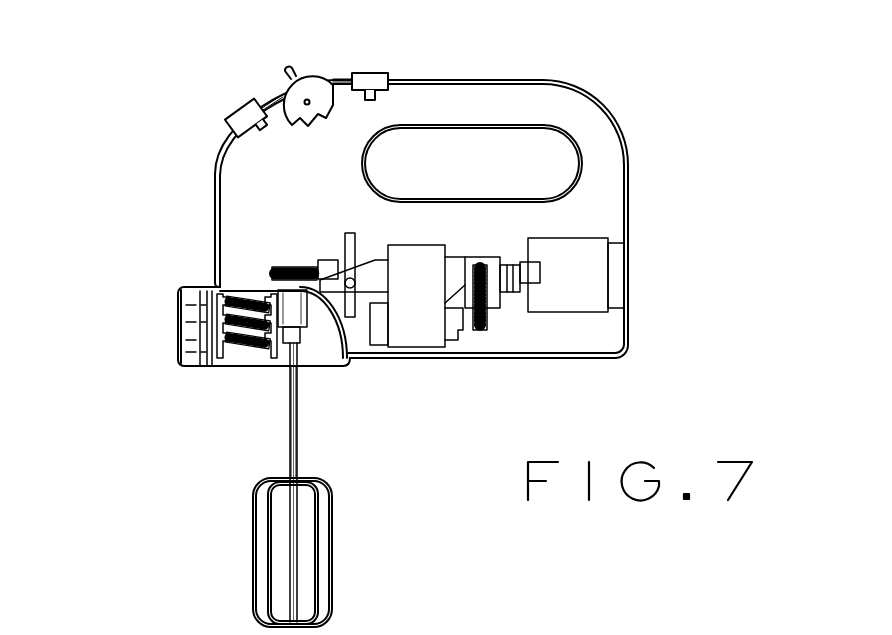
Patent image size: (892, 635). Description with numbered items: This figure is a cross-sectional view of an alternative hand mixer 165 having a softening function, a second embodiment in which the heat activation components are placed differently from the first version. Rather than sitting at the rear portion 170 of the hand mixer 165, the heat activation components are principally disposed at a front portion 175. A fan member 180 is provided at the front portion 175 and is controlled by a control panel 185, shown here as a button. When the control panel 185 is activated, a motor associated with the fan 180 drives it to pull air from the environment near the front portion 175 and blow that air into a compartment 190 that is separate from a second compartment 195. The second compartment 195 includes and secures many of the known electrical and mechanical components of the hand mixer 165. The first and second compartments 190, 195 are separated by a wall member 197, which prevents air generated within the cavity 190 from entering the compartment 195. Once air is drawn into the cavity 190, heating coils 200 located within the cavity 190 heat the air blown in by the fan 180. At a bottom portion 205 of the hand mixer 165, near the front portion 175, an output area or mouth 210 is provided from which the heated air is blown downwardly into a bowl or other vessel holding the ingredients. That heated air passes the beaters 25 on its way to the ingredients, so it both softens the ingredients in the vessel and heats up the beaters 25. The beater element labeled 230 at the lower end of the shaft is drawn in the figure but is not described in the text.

The beaters 25 is at (289, 422).
The hand mixer 165 is at (652, 120).
The rear portion 170 is at (670, 240).
The front portion 175 is at (152, 298).
The fan member 180 is at (193, 303).
The control panel 185 is at (302, 62).
The compartment 190 is at (201, 370).
The second compartment 195 is at (328, 173).
The wall member 197 is at (249, 282).
The heating coils 200 is at (223, 313).
The bottom portion 205 is at (317, 388).
The output area or mouth 210 is at (258, 368).
The beater 230 is at (353, 556).